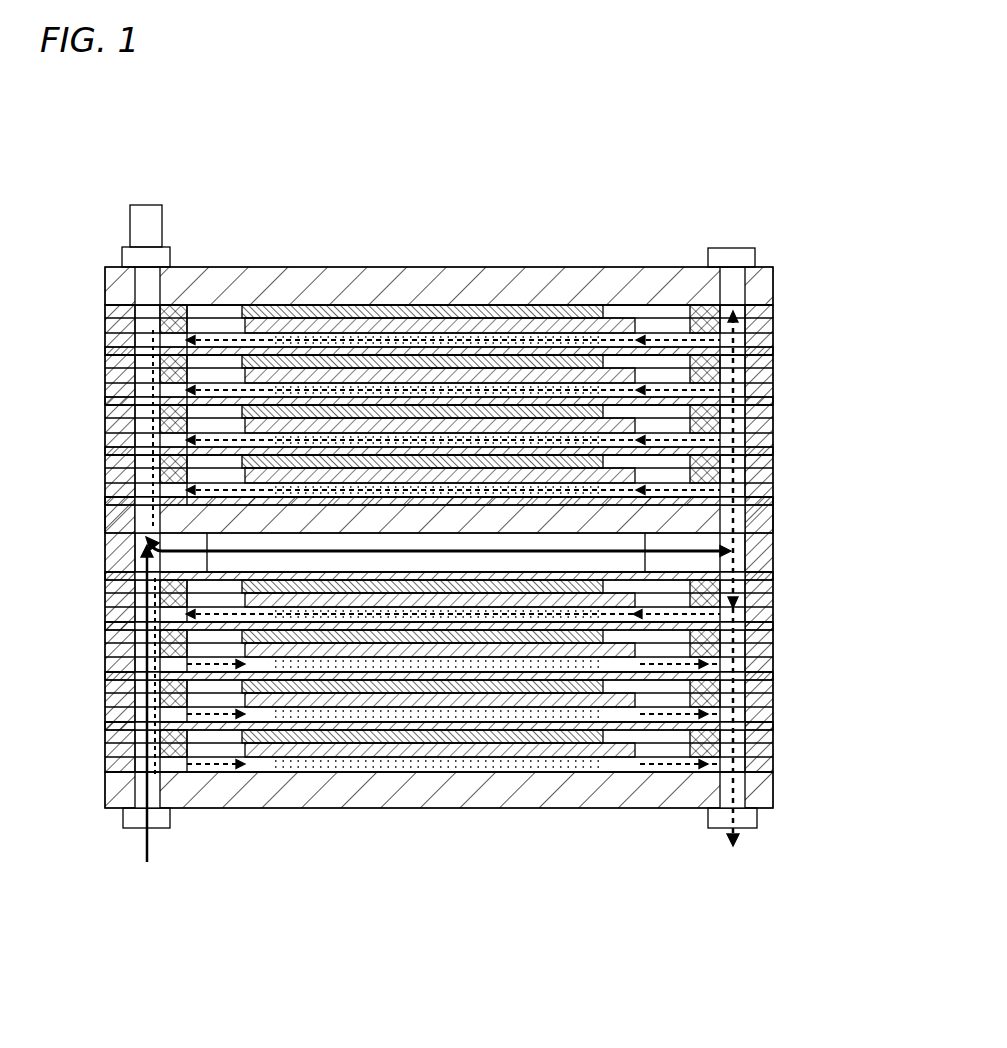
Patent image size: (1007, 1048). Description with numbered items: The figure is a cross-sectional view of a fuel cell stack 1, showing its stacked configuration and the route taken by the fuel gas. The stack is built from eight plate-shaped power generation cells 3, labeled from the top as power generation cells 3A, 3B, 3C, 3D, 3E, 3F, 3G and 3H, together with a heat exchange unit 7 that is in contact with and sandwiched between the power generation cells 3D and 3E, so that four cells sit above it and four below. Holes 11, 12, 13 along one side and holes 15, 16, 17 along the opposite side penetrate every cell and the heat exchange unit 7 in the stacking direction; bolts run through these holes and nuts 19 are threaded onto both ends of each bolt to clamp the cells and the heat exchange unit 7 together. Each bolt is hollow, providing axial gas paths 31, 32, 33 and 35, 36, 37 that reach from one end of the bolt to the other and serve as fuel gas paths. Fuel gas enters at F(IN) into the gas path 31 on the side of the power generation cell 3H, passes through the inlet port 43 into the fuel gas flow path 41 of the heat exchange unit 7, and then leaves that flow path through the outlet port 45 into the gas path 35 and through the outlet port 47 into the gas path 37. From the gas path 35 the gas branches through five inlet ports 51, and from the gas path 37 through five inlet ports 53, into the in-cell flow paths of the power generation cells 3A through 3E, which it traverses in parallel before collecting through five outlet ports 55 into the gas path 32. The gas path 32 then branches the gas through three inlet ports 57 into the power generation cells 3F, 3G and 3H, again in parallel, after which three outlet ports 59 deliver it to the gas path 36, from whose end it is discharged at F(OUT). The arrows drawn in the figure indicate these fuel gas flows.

The fuel cell stack 1 is at (810, 153).
The power generation cell 3 is at (774, 505).
The power generation cell 3A is at (105, 326).
The power generation cell 3B is at (105, 375).
The power generation cell 3C is at (105, 424).
The power generation cell 3D is at (105, 474).
The power generation cell 3E is at (105, 600).
The power generation cell 3F is at (105, 650).
The power generation cell 3G is at (105, 700).
The power generation cell 3H is at (105, 750).
The heat exchange unit 7 is at (782, 553).
The hole 11 is at (402, 288).
The hole 12 is at (402, 288).
The hole 13 is at (122, 310).
The hole 15 is at (794, 537).
The hole 16 is at (794, 537).
The hole 17 is at (822, 328).
The nut 19 is at (125, 263).
The gas path 31 is at (83, 538).
The gas path 32 is at (83, 538).
The gas path 33 is at (125, 360).
The gas path 35 is at (475, 368).
The gas path 36 is at (475, 368).
The gas path 37 is at (822, 378).
The fuel gas flow path 41 is at (412, 548).
The inlet port 43 is at (146, 546).
The outlet port 45 is at (784, 578).
The outlet port 47 is at (776, 567).
The inlet port 51 is at (726, 426).
The inlet port 53 is at (702, 488).
The outlet port 55 is at (188, 488).
The inlet port 57 is at (243, 766).
The outlet port 59 is at (702, 766).